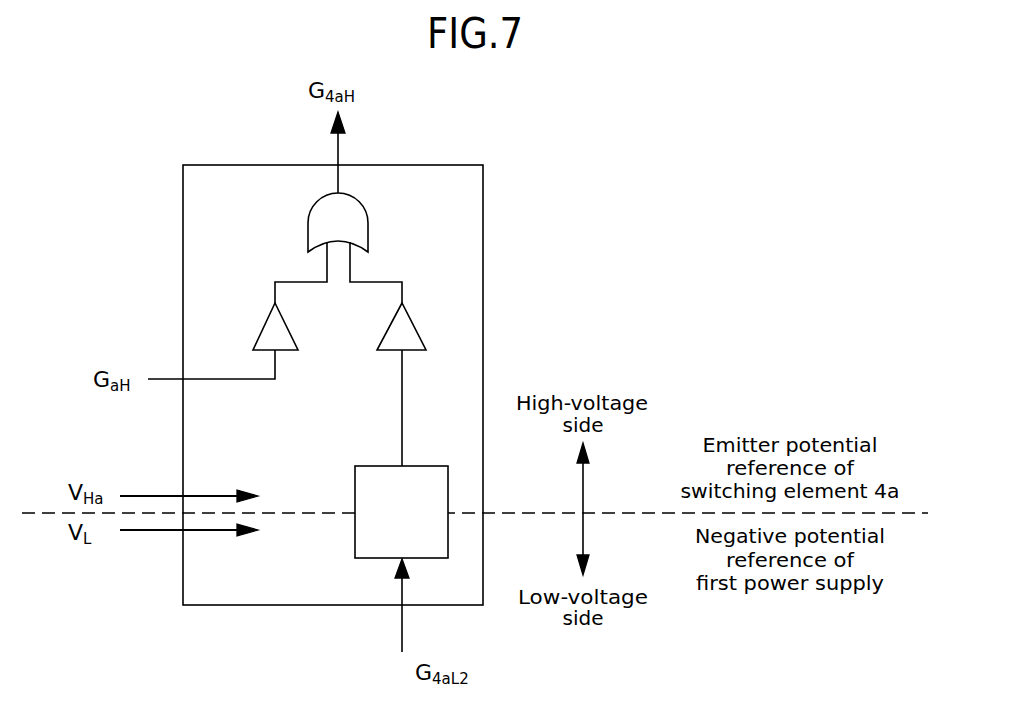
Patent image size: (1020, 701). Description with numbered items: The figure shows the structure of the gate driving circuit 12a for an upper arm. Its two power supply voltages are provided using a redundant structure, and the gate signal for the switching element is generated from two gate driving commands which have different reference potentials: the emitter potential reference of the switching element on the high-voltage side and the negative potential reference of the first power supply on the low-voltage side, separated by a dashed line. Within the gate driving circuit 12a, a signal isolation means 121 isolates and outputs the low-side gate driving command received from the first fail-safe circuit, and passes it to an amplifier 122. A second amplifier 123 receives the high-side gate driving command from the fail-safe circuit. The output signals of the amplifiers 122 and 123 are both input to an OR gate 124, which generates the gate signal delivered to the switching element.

The gate driving circuit 12a is at (483, 198).
The signal isolation means 121 is at (381, 535).
The amplifier 122 is at (416, 345).
The amplifier 123 is at (285, 338).
The OR gate 124 is at (355, 218).